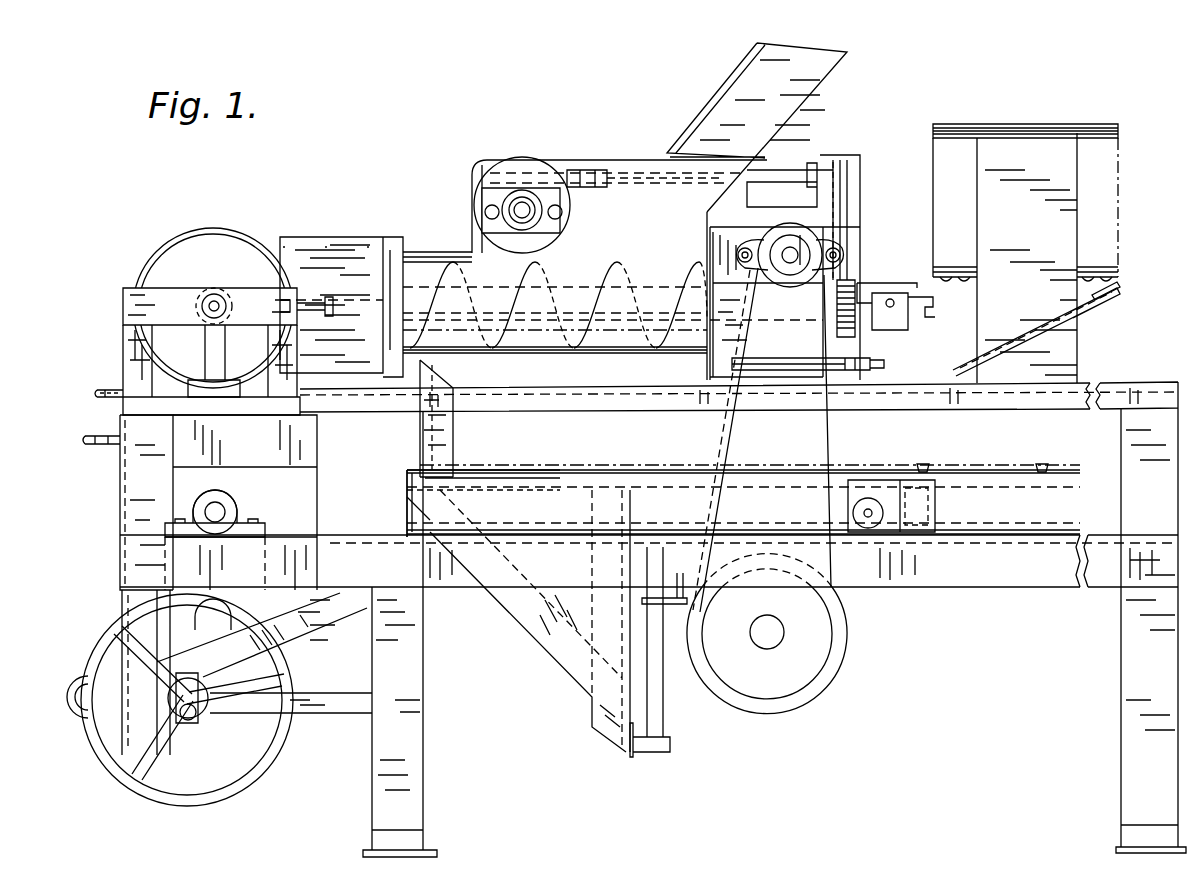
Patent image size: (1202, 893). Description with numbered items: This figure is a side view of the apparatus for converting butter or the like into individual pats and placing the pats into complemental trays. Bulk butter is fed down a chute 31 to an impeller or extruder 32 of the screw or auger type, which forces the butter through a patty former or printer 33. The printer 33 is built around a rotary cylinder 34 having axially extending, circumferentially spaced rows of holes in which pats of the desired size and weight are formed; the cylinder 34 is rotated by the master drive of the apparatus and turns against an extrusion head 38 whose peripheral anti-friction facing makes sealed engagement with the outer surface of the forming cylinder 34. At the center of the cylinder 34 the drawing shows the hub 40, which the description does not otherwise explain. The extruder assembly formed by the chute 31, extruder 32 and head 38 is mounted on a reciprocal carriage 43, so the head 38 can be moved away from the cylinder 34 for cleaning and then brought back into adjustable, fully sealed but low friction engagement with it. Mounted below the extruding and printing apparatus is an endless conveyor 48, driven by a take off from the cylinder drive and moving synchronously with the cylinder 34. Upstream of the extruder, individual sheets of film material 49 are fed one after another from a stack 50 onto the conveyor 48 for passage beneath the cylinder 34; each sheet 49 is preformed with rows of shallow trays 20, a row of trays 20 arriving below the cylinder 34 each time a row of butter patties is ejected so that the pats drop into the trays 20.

The shallow tray 20 is at (1085, 312).
The chute 31 is at (813, 70).
The impeller or extruder 32 is at (628, 262).
The patty former or printer 33 is at (276, 208).
The rotary cylinder 34 is at (172, 247).
The extrusion head 38 is at (283, 247).
The hub 40 is at (218, 296).
The reciprocal carriage 43 is at (473, 483).
The endless conveyor 48 is at (112, 390).
The sheets of film material 49 is at (960, 366).
The stack 50 is at (1100, 125).